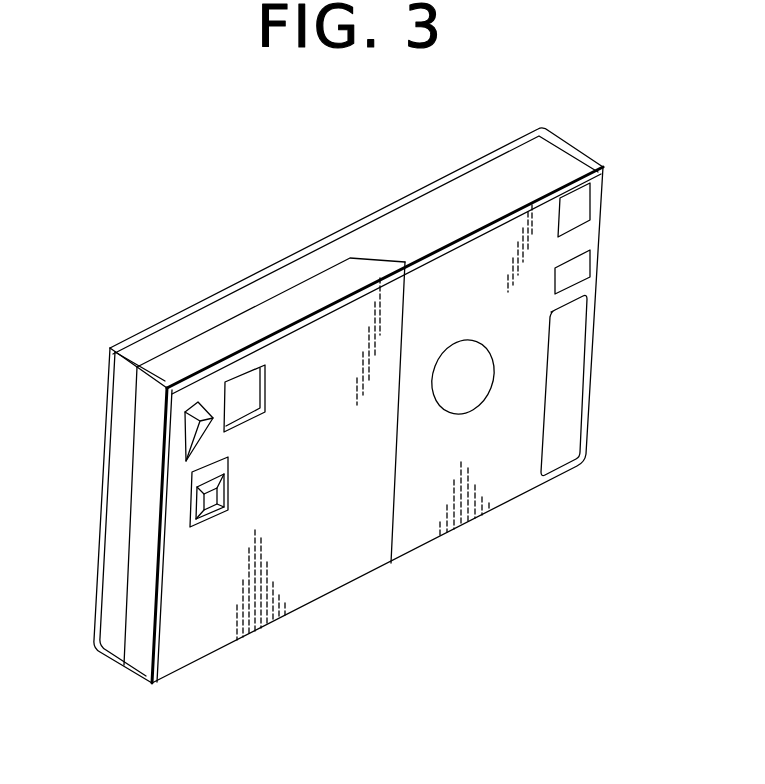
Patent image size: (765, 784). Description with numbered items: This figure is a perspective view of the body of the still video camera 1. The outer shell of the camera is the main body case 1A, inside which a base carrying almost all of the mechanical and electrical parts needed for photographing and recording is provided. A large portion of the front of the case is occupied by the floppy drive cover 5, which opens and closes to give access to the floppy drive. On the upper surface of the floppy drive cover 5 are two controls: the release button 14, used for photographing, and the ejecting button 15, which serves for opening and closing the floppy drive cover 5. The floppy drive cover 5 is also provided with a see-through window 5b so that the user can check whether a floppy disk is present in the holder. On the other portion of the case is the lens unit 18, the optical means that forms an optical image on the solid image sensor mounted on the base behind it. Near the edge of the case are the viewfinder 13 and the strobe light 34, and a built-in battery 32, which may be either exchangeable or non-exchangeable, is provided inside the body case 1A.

The still video camera 1 is at (99, 363).
The main body case 1A is at (531, 161).
The floppy drive cover 5 is at (213, 615).
The see-through window 5b is at (242, 397).
The viewfinder 13 is at (577, 210).
The release button 14 is at (185, 437).
The ejecting button 15 is at (212, 498).
The lens unit 18 is at (467, 393).
The built-in battery 32 is at (565, 384).
The strobe light 34 is at (577, 272).